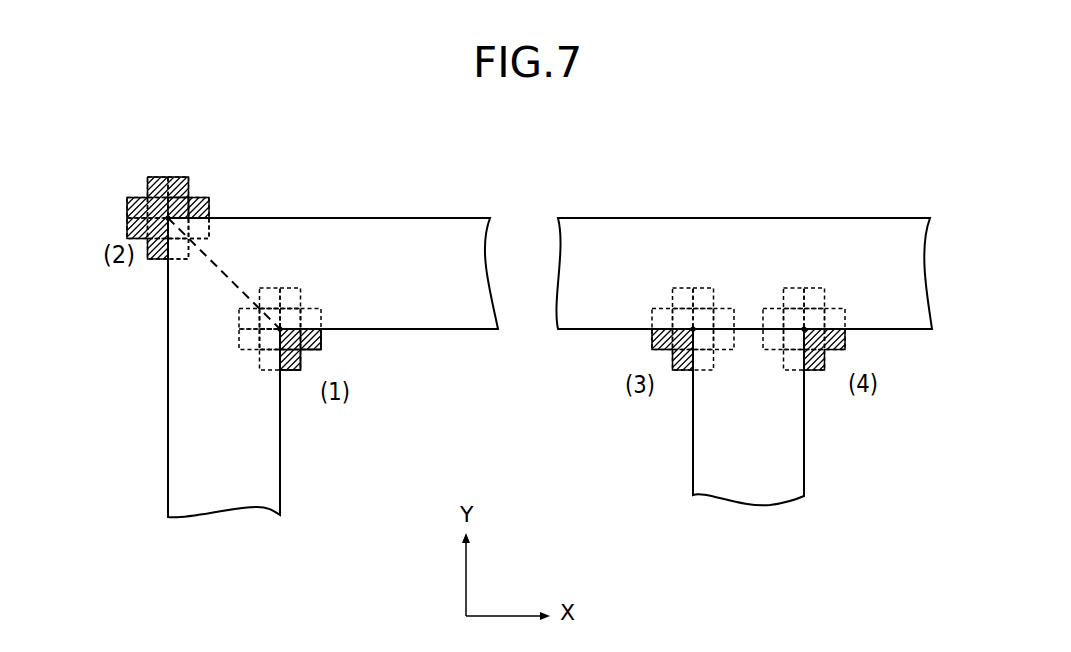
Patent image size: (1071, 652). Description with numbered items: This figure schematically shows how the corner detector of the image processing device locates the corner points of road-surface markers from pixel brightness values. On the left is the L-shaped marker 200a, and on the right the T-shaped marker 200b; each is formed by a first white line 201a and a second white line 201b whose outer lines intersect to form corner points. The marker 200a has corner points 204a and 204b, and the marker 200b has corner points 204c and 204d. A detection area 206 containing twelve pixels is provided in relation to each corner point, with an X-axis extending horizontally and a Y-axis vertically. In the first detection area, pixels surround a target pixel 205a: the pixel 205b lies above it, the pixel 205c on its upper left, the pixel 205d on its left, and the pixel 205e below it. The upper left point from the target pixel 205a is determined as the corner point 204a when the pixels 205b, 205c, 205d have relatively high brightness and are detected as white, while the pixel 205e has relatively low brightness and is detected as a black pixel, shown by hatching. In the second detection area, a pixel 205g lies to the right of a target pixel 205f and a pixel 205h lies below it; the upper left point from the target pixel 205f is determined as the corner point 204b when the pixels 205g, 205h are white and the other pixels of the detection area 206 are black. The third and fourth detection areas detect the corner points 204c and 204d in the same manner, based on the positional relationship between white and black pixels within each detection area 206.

The marker 200a is at (377, 218).
The marker 200b is at (742, 218).
The first white line 201a is at (447, 218).
The second white line 201b is at (282, 480).
The corner point 204a is at (283, 327).
The corner point 204b is at (152, 196).
The corner point 204c is at (653, 345).
The corner point 204d is at (843, 343).
The target pixel 205a is at (321, 343).
The pixel 205b is at (290, 312).
The pixel 205c is at (267, 323).
The pixel 205d is at (272, 345).
The pixel 205e is at (290, 372).
The target pixel 205f is at (183, 215).
The pixel 205g is at (197, 227).
The pixel 205h is at (176, 259).
The detection area 206 is at (175, 178).